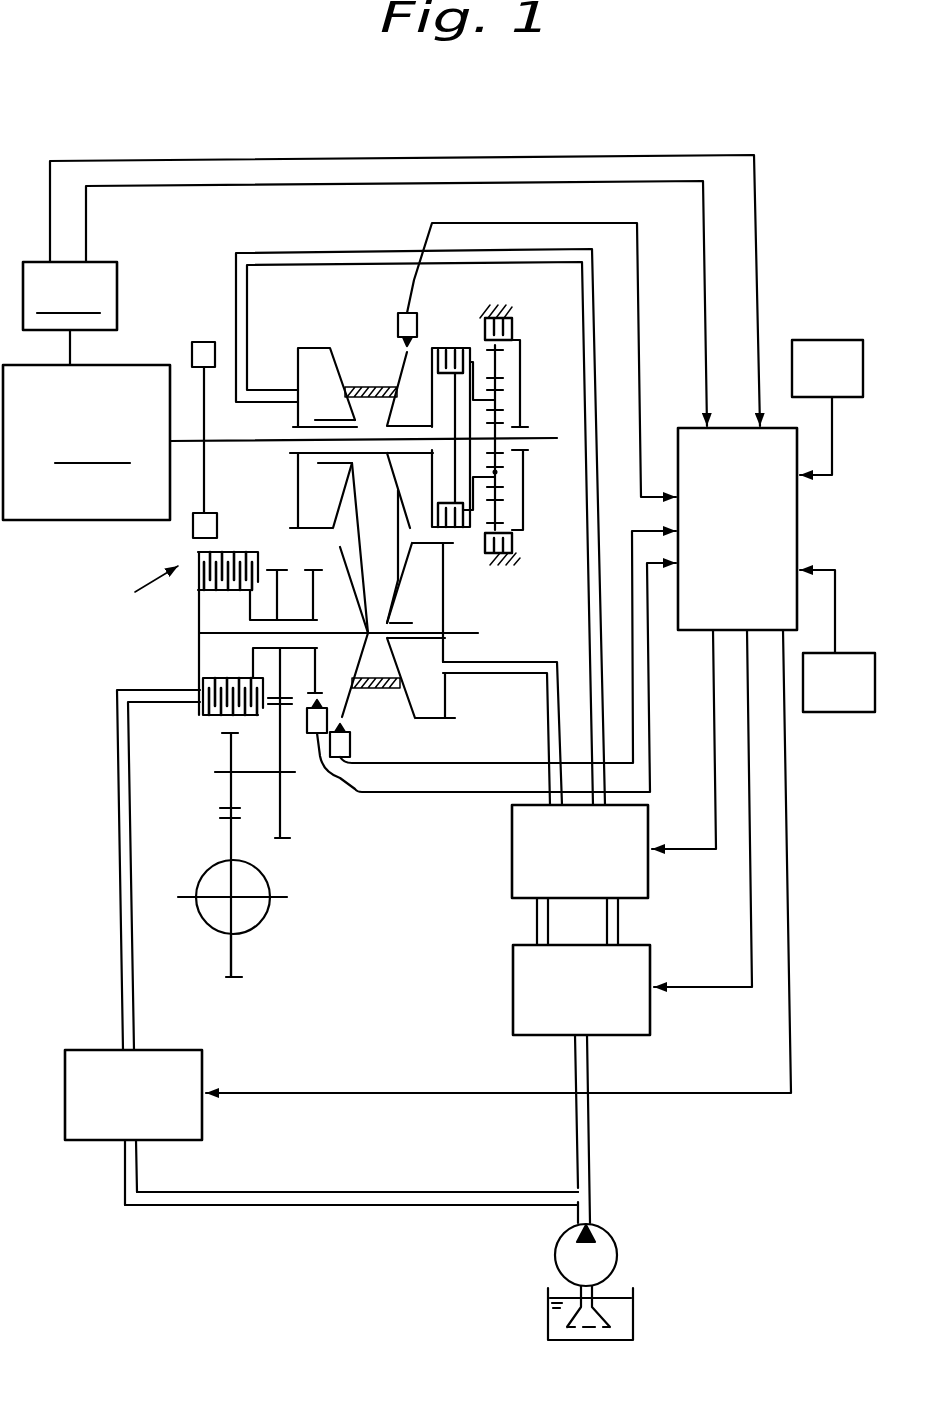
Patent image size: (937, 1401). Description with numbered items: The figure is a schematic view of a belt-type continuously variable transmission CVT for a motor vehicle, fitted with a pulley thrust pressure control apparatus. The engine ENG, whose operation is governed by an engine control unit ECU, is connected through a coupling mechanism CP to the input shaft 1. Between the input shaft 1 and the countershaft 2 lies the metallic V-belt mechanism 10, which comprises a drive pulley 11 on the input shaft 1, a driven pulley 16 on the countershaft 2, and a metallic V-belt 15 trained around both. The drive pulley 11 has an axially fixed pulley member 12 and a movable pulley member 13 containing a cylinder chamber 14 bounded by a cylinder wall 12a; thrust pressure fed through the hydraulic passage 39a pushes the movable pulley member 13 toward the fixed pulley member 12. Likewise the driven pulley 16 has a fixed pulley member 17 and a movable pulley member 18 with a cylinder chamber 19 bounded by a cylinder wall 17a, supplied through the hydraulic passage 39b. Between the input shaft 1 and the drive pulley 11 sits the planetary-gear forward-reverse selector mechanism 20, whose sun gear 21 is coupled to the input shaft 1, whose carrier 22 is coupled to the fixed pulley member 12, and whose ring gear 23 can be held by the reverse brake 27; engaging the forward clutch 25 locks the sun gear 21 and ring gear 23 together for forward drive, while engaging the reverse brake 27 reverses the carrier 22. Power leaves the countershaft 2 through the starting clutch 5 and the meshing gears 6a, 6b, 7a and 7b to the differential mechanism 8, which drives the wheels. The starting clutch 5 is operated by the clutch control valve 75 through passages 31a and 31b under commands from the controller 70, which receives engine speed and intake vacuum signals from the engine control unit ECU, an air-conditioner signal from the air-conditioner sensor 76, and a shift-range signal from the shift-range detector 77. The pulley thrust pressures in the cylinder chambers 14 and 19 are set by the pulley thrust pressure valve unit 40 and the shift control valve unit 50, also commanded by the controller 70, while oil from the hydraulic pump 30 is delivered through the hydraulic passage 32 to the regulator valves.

The input shaft 1 is at (240, 443).
The countershaft 2 is at (322, 637).
The starting clutch 5 is at (237, 550).
The meshing gear 6a is at (292, 548).
The meshing gear 6b is at (287, 842).
The meshing gear 7a is at (228, 733).
The meshing gear 7b is at (234, 978).
The differential mechanism 8 is at (262, 918).
The metallic V-belt mechanism 10 is at (455, 571).
The drive pulley 11 is at (318, 360).
The axially fixed pulley member 12 is at (400, 370).
The cylinder wall 12a is at (293, 411).
The movable pulley member 13 is at (313, 346).
The cylinder chamber 14 is at (340, 411).
The metallic V-belt 15 is at (392, 551).
The driven pulley 16 is at (390, 656).
The fixed pulley member 17 is at (360, 606).
The cylinder wall 17a is at (447, 698).
The movable pulley member 18 is at (381, 701).
The cylinder chamber 19 is at (434, 626).
The planetary-gear forward-reverse selector mechanism 20 is at (520, 415).
The sun gear 21 is at (518, 433).
The carrier 22 is at (497, 475).
The ring gear 23 is at (512, 522).
The forward clutch 25 is at (452, 348).
The reverse brake 27 is at (513, 323).
The hydraulic pump 30 is at (617, 1252).
The hydraulic passage 31a is at (322, 1192).
The hydraulic passage 31b is at (117, 955).
The hydraulic passage 32 is at (592, 1132).
The hydraulic passage 39a is at (372, 232).
The hydraulic passage 39b is at (543, 658).
The pulley thrust pressure valve unit 40 is at (602, 1019).
The shift control valve unit 50 is at (602, 879).
The controller 70 is at (757, 558).
The clutch control valve 75 is at (152, 1117).
The air-conditioner sensor 76 is at (818, 340).
The shift-range detector 77 is at (838, 713).
The engine control unit ECU is at (391, 290).
The engine ENG is at (86, 442).
The coupling mechanism CP is at (202, 342).
The belt-type continuously variable transmission CVT is at (121, 587).